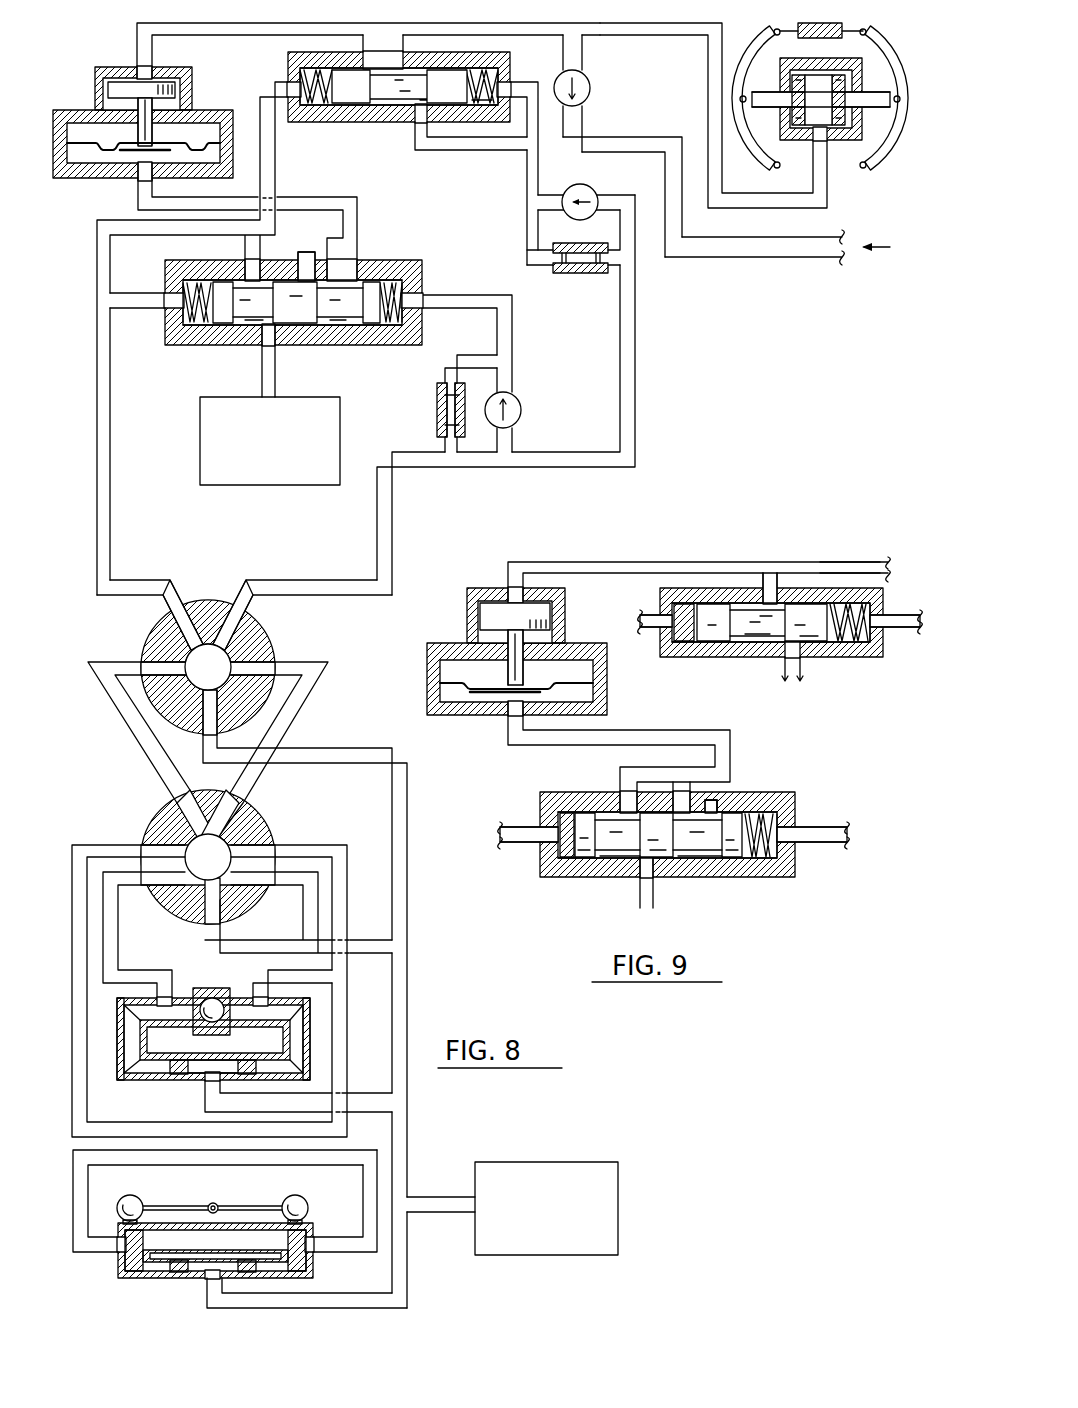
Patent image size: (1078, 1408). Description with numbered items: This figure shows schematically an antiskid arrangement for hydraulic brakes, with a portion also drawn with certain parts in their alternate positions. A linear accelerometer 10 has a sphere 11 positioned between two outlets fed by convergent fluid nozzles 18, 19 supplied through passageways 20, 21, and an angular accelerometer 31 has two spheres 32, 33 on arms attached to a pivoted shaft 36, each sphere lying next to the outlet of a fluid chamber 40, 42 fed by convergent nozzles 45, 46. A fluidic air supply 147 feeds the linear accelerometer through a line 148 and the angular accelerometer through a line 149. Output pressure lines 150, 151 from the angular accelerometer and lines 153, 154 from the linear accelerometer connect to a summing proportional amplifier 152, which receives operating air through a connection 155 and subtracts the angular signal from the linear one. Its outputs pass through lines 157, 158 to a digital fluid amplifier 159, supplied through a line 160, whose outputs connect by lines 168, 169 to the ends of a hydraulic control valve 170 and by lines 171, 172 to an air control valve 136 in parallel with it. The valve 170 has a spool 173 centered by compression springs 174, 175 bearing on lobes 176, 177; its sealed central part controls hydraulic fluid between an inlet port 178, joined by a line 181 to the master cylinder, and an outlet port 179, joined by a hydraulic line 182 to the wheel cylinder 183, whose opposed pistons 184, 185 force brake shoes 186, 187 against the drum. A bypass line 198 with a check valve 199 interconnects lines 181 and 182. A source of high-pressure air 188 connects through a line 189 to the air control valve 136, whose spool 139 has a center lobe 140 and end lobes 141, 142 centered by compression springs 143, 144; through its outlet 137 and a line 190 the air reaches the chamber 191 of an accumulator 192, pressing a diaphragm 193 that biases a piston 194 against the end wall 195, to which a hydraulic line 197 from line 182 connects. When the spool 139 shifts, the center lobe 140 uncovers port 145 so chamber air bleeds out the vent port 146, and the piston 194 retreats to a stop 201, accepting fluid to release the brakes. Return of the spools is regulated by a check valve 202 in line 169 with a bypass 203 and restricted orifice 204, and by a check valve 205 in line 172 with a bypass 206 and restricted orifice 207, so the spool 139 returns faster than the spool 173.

In FIG. 8, the linear accelerometer 10 is at (185, 1033).
In FIG. 8, the sphere 11 is at (216, 1004).
In FIG. 8, the convergent fluid nozzle 18 is at (186, 1068).
In FIG. 8, the convergent fluid nozzle 19 is at (247, 1062).
In FIG. 8, the passageway 20 is at (122, 1042).
In FIG. 8, the passageway 21 is at (306, 1012).
In FIG. 8, the angular accelerometer 31 is at (198, 1238).
In FIG. 8, the sphere 32 is at (128, 1198).
In FIG. 8, the sphere 33 is at (306, 1200).
In FIG. 8, the shaft 36 is at (218, 1204).
In FIG. 8, the fluid chamber 40 is at (140, 1240).
In FIG. 8, the fluid chamber 42 is at (292, 1234).
In FIG. 8, the convergent nozzle 45 is at (186, 1266).
In FIG. 8, the convergent nozzle 46 is at (247, 1254).
In FIG. 8, the air control valve 136 is at (397, 256).
In FIG. 9, the air control valve 136 is at (670, 826).
In FIG. 9, the outlet 137 is at (624, 792).
In FIG. 9, the spool 139 is at (640, 906).
In FIG. 9, the center lobe 140 is at (668, 860).
In FIG. 9, the lobe 141 is at (582, 860).
In FIG. 9, the lobe 142 is at (731, 858).
In FIG. 9, the compression spring 143 is at (552, 856).
In FIG. 9, the compression spring 144 is at (780, 822).
In FIG. 9, the port 145 is at (682, 800).
In FIG. 9, the vent port 146 is at (718, 802).
In FIG. 8, the fluidic air supply 147 is at (600, 1160).
In FIG. 8, the line 148 is at (334, 1292).
In FIG. 8, the line 149 is at (360, 1086).
In FIG. 8, the output pressure line 150 is at (74, 1194).
In FIG. 8, the output pressure line 151 is at (372, 1164).
In FIG. 8, the summing proportional amplifier 152 is at (148, 816).
In FIG. 8, the line 153 is at (118, 942).
In FIG. 8, the line 154 is at (314, 920).
In FIG. 8, the connection 155 is at (348, 930).
In FIG. 8, the line 157 is at (128, 732).
In FIG. 8, the line 158 is at (288, 723).
In FIG. 8, the digital fluid amplifier 159 is at (141, 630).
In FIG. 8, the line 160 is at (341, 762).
In FIG. 8, the line 168 is at (94, 416).
In FIG. 9, the line 168 is at (650, 614).
In FIG. 8, the line 169 is at (550, 462).
In FIG. 9, the line 169 is at (896, 610).
In FIG. 8, the hydraulic control valve 170 is at (395, 109).
In FIG. 9, the hydraulic control valve 170 is at (771, 613).
In FIG. 8, the line 171 is at (129, 302).
In FIG. 9, the line 171 is at (514, 824).
In FIG. 8, the line 172 is at (514, 334).
In FIG. 9, the line 172 is at (830, 844).
In FIG. 8, the spool 173 is at (387, 123).
In FIG. 9, the spool 173 is at (758, 647).
In FIG. 8, the compression spring 174 is at (302, 70).
In FIG. 8, the compression spring 175 is at (506, 70).
In FIG. 8, the lobe 176 is at (330, 112).
In FIG. 9, the lobe 176 is at (704, 645).
In FIG. 8, the lobe 177 is at (453, 112).
In FIG. 9, the lobe 177 is at (814, 648).
In FIG. 8, the inlet port 178 is at (418, 130).
In FIG. 9, the inlet port 178 is at (790, 682).
In FIG. 8, the outlet port 179 is at (404, 64).
In FIG. 9, the outlet port 179 is at (782, 580).
In FIG. 8, the line 181 is at (730, 258).
In FIG. 8, the hydraulic line 182 is at (674, 34).
In FIG. 9, the hydraulic line 182 is at (860, 560).
In FIG. 8, the wheel cylinder 183 is at (807, 123).
In FIG. 8, the piston 184 is at (794, 112).
In FIG. 8, the piston 185 is at (844, 158).
In FIG. 8, the brake shoe 186 is at (768, 40).
In FIG. 8, the brake shoe 187 is at (880, 40).
In FIG. 8, the source of high-pressure air 188 is at (200, 450).
In FIG. 8, the line 189 is at (278, 366).
In FIG. 8, the line 190 is at (342, 220).
In FIG. 9, the line 190 is at (562, 744).
In FIG. 8, the chamber 191 is at (134, 125).
In FIG. 9, the chamber 191 is at (490, 646).
In FIG. 8, the accumulator 192 is at (60, 118).
In FIG. 9, the accumulator 192 is at (430, 658).
In FIG. 8, the diaphragm 193 is at (121, 146).
In FIG. 9, the diaphragm 193 is at (482, 703).
In FIG. 8, the piston 194 is at (116, 88).
In FIG. 9, the piston 194 is at (545, 632).
In FIG. 8, the end wall 195 is at (169, 72).
In FIG. 9, the end wall 195 is at (482, 588).
In FIG. 8, the hydraulic line 197 is at (332, 28).
In FIG. 9, the hydraulic line 197 is at (580, 564).
In FIG. 8, the bypass line 198 is at (594, 128).
In FIG. 8, the check valve 199 is at (590, 78).
In FIG. 8, the stop 201 is at (165, 105).
In FIG. 9, the stop 201 is at (486, 640).
In FIG. 8, the check valve 202 is at (598, 192).
In FIG. 8, the bypass 203 is at (525, 240).
In FIG. 8, the restricted orifice 204 is at (580, 274).
In FIG. 8, the check valve 205 is at (523, 414).
In FIG. 8, the bypass 206 is at (456, 363).
In FIG. 8, the restricted orifice 207 is at (436, 410).